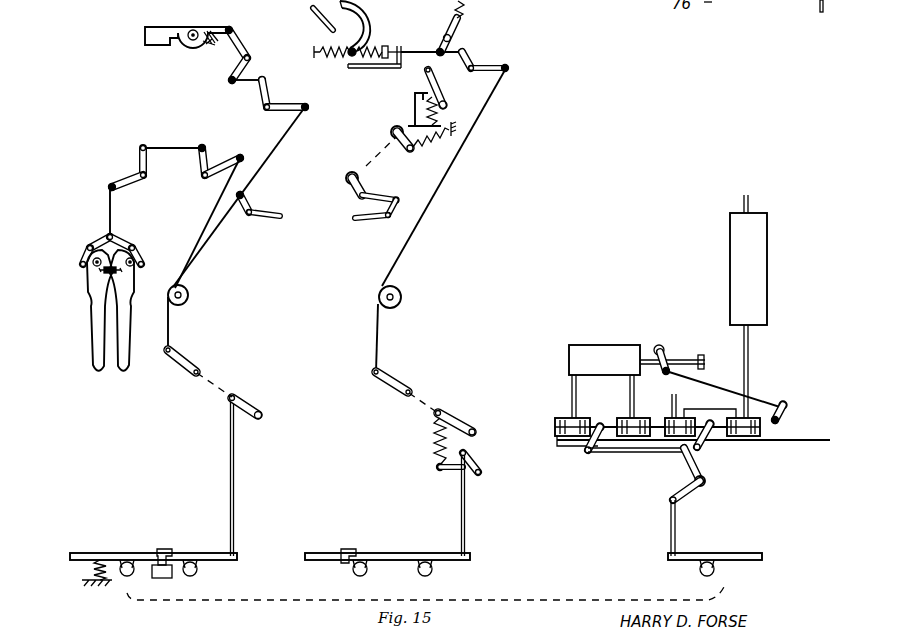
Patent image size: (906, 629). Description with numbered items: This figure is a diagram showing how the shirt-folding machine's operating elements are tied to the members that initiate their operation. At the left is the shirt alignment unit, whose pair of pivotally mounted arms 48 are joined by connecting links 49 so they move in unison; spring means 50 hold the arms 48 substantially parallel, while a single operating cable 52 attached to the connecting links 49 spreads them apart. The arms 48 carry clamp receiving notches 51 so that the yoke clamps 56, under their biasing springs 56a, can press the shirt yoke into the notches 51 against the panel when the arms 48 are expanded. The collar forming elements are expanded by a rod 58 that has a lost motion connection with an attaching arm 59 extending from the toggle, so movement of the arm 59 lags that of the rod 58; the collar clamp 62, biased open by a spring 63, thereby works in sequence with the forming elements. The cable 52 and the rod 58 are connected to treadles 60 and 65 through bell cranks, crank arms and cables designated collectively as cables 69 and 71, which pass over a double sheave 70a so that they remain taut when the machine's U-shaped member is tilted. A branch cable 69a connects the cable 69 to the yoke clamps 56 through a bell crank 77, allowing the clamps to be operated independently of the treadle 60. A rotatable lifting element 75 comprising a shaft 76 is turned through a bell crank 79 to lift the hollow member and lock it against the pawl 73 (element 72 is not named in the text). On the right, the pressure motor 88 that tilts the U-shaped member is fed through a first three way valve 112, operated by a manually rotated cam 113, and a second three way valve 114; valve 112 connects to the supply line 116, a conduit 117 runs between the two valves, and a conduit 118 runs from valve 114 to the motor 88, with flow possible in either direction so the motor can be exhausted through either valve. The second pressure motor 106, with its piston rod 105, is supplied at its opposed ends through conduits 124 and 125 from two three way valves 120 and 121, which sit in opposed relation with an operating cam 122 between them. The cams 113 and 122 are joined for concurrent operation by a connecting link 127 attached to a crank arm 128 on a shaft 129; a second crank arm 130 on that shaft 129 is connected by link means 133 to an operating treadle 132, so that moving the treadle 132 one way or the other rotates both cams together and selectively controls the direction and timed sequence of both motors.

The pivotally mounted arms 48 is at (95, 368).
The connecting links 49 is at (97, 243).
The spring means 50 is at (106, 274).
The clamp receiving notches 51 is at (85, 276).
The operating cable 52 is at (112, 207).
The yoke clamps 56 is at (150, 26).
The biasing springs 56a is at (206, 42).
The rod 58 is at (413, 52).
The attaching arm 59 is at (382, 63).
The treadle 60 is at (95, 555).
The collar clamp 62 is at (350, 8).
The spring 63 is at (330, 56).
The treadle 65 is at (309, 555).
The cable 69 is at (190, 150).
The branch cable 69a is at (281, 149).
The double sheave 70a is at (189, 302).
The cable 71 is at (380, 341).
The bracket 72 is at (415, 107).
The pawl 73 is at (444, 88).
The lifting element 75 is at (402, 146).
The shaft 76 is at (372, 152).
The bell crank 77 is at (266, 214).
The bell crank 79 is at (373, 218).
The pressure motor 88 is at (760, 268).
The piston rod 105 is at (678, 356).
The pressure motor 106 is at (599, 353).
The first three way valve 112 is at (681, 417).
The cam 113 is at (712, 444).
The second three way valve 114 is at (737, 418).
The supply line 116 is at (783, 446).
The conduit 117 is at (702, 407).
The conduit 118 is at (750, 357).
The three way valve 120 is at (562, 422).
The three way valve 121 is at (670, 400).
The operating cam 122 is at (607, 417).
The conduit 124 is at (570, 389).
The conduit 125 is at (630, 389).
The connecting link 127 is at (628, 453).
The crank arm 128 is at (680, 466).
The shaft 129 is at (706, 482).
The second crank arm 130 is at (672, 497).
The operating treadle 132 is at (760, 553).
The link means 133 is at (676, 525).